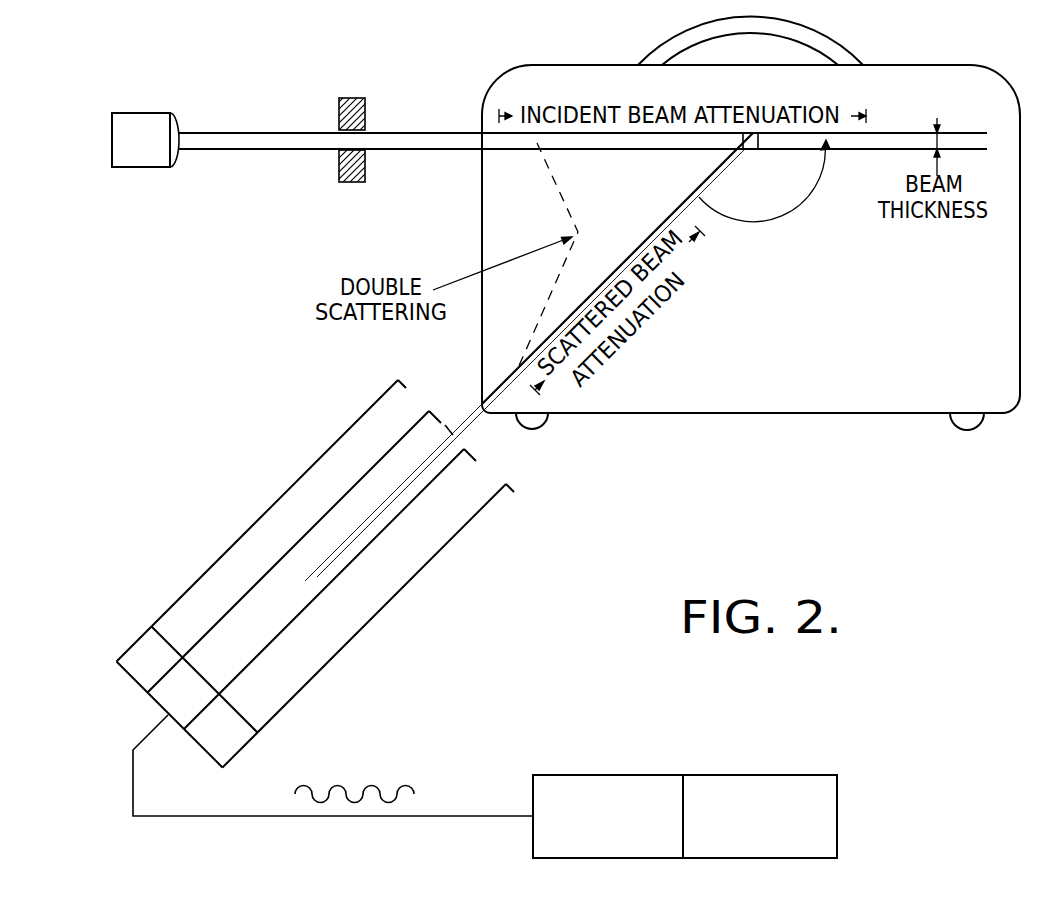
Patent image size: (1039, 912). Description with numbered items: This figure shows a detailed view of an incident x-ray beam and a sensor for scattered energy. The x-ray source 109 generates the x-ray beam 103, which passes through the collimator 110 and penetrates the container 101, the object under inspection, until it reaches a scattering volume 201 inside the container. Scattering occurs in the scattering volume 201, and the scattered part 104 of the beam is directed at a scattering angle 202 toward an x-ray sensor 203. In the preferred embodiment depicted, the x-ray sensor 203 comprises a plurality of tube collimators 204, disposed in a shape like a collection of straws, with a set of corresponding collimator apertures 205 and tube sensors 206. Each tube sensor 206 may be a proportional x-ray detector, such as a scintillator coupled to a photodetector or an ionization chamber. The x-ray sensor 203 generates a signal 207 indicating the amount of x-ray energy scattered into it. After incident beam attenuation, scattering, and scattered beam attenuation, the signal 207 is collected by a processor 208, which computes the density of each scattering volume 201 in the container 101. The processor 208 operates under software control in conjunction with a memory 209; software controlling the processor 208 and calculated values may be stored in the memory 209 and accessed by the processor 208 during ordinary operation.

The container 101 is at (833, 414).
The x-ray beam 103 is at (248, 149).
The scattered part 104 is at (656, 232).
The x-ray source 109 is at (141, 113).
The collimator 110 is at (350, 97).
The scattering volume 201 is at (758, 143).
The scattering angle 202 is at (757, 221).
The x-ray sensor 203 is at (426, 606).
The tube collimator 204 is at (235, 541).
The collimator aperture 205 is at (452, 448).
The tube sensor 206 is at (148, 660).
The signal 207 is at (371, 786).
The processor 208 is at (608, 816).
The memory 209 is at (760, 816).